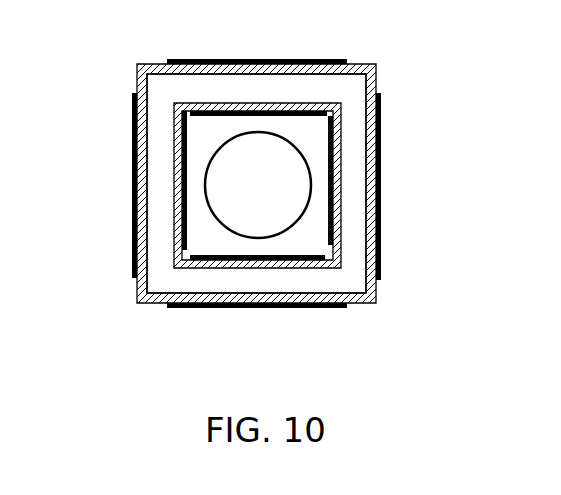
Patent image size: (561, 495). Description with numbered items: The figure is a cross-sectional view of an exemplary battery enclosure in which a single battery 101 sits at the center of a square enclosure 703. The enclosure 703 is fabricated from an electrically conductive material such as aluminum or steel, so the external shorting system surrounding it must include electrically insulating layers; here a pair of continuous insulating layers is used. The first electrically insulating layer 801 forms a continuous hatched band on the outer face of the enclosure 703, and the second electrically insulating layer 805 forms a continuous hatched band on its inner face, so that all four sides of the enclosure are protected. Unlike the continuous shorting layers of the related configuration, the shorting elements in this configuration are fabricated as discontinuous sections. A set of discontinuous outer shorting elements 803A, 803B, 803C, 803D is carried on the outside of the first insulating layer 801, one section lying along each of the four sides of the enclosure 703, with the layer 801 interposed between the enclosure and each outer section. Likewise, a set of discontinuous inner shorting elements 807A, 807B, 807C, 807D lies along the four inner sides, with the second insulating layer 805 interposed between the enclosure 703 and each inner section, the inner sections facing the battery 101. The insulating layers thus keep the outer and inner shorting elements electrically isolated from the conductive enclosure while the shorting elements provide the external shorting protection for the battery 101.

The battery 101 is at (279, 196).
The enclosure 703 is at (160, 82).
The first electrically insulating layer 801 is at (137, 75).
The outer shorting element section 803A is at (133, 157).
The outer shorting element section 803B is at (250, 310).
The outer shorting element section 803C is at (417, 82).
The outer shorting element section 803D is at (287, 62).
The second electrically insulating layer 805 is at (338, 166).
The inner shorting element section 807A is at (182, 207).
The inner shorting element section 807B is at (300, 258).
The inner shorting element section 807C is at (334, 202).
The inner shorting element section 807D is at (243, 112).